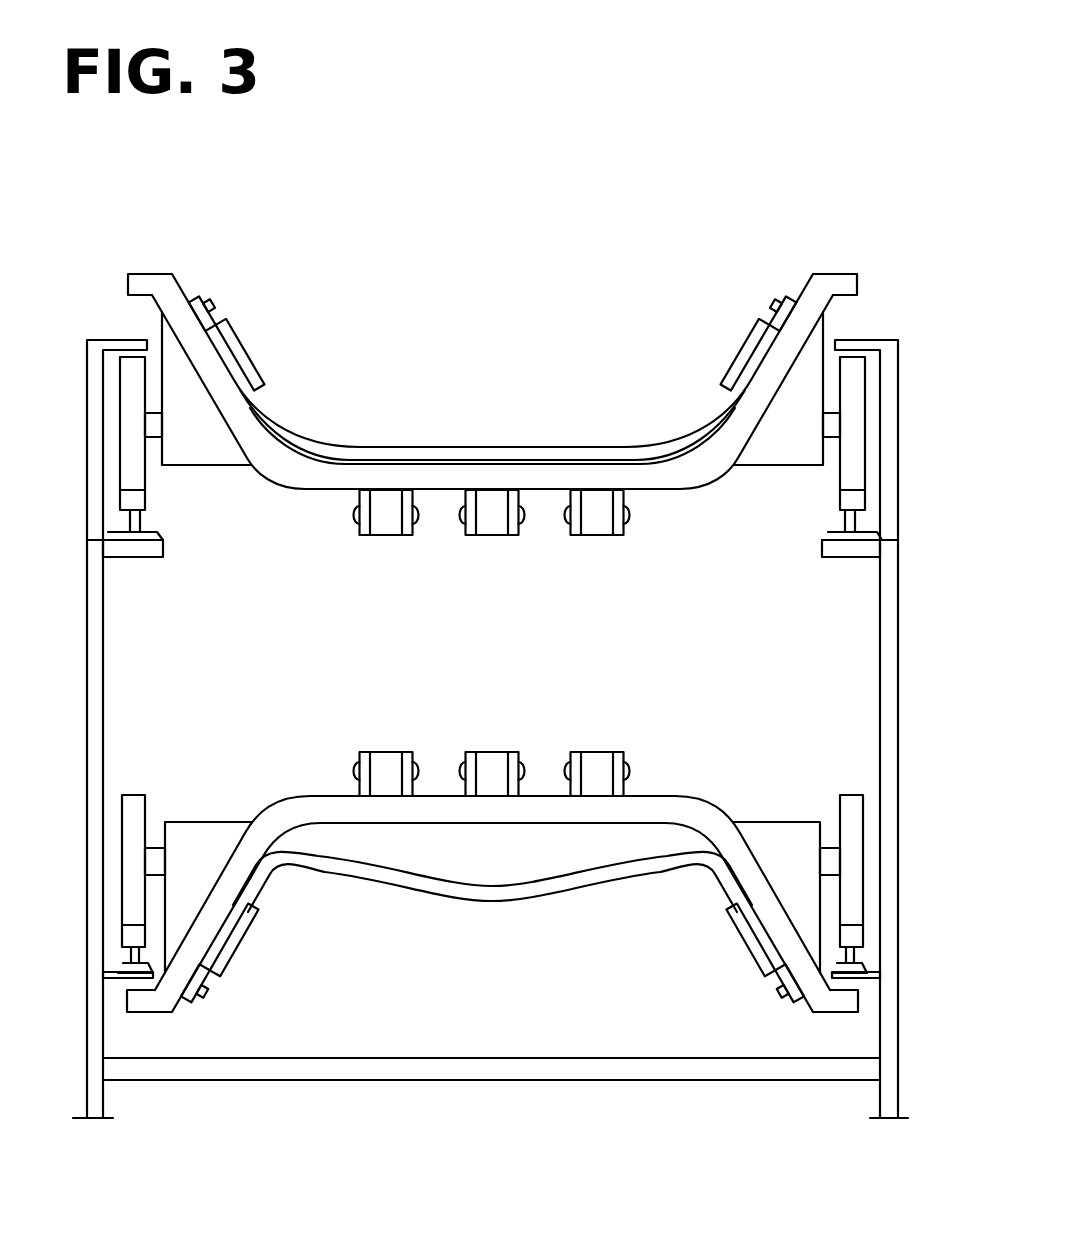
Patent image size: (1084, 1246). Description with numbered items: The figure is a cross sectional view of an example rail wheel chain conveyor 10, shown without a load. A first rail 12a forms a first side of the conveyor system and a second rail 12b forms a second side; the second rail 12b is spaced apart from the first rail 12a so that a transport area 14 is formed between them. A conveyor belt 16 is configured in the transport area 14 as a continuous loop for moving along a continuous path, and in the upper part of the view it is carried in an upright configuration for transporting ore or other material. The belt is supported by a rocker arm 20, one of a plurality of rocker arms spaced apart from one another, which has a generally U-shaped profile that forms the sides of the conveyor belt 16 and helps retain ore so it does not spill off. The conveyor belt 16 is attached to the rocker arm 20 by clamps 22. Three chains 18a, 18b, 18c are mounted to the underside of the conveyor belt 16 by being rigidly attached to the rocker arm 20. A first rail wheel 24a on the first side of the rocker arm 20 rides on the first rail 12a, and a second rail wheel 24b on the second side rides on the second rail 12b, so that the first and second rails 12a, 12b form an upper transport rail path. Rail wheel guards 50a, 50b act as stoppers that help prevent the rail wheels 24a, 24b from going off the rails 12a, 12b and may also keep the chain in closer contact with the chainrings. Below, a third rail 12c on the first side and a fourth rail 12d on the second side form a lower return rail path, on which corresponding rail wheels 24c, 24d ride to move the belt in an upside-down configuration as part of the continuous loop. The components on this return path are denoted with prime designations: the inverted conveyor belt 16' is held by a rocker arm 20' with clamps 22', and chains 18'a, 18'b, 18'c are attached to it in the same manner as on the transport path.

The rail wheel chain conveyor 10 is at (826, 197).
The first rail 12a is at (143, 557).
The second rail 12b is at (852, 560).
The third rail 12c is at (112, 978).
The fourth rail 12d is at (862, 976).
The transport area 14 is at (472, 327).
The conveyor belt 16 is at (492, 397).
The conveyor belt (return path) 16' is at (492, 907).
The chain 18a is at (388, 537).
The chain 18b is at (491, 537).
The chain 18c is at (600, 537).
The chain (return path) 18'a is at (383, 738).
The chain (return path) 18'b is at (485, 738).
The chain (return path) 18'c is at (582, 738).
The rocker arm 20 is at (492, 251).
The rocker arm (return path) 20' is at (492, 1022).
The clamp 22 is at (493, 332).
The clamp (return path) 22' is at (492, 953).
The first rail wheel 24a is at (148, 473).
The second rail wheel 24b is at (840, 475).
The rail wheel (return path) 24c is at (144, 798).
The rail wheel (return path) 24d is at (840, 793).
The rail wheel guard 50a is at (127, 340).
The rail wheel guard 50b is at (857, 340).